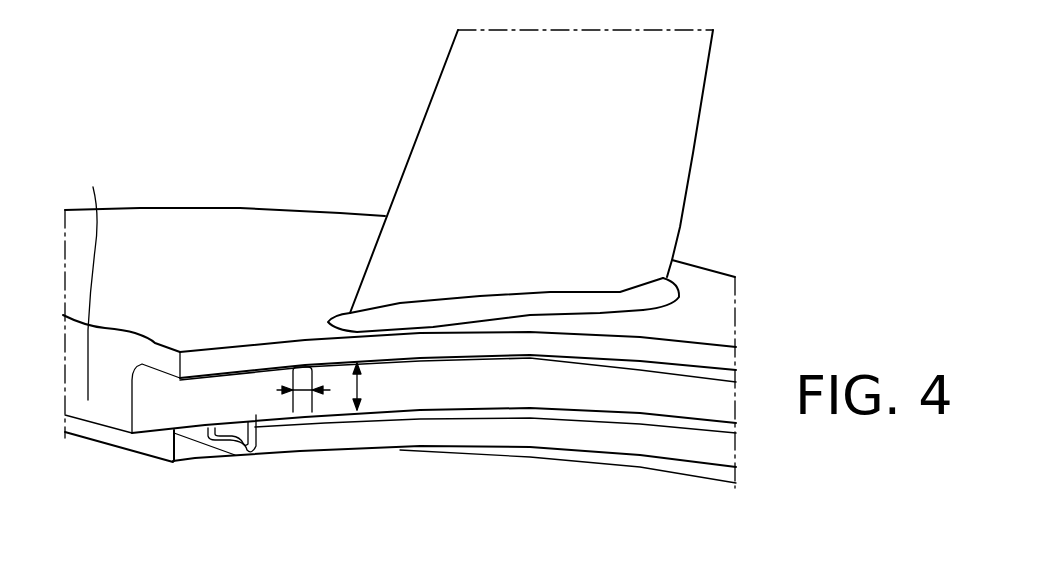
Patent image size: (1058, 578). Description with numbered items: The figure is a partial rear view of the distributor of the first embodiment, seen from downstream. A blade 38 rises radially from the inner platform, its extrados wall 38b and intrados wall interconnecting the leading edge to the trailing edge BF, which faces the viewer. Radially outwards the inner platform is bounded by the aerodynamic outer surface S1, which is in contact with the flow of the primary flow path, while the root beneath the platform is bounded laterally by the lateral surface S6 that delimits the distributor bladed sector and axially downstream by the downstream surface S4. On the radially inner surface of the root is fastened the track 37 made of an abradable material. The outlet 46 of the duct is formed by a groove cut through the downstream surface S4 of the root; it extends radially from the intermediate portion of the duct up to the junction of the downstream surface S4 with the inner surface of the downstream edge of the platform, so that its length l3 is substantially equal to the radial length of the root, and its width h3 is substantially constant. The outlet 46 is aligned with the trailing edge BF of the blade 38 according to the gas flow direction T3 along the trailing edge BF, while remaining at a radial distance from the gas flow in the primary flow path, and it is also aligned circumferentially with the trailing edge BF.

The blade 38 is at (571, 171).
The blade side surface 38b is at (657, 170).
The trailing edge BF is at (420, 125).
The gas flow direction T3 is at (522, 285).
The aerodynamic outer surface S1 is at (167, 257).
The lateral surface S6 is at (93, 280).
The downstream surface S4 is at (578, 392).
The track 37 is at (181, 455).
The outlet 46 is at (293, 378).
The length of the outlet l3 is at (302, 392).
The width of the outlet h3 is at (358, 383).